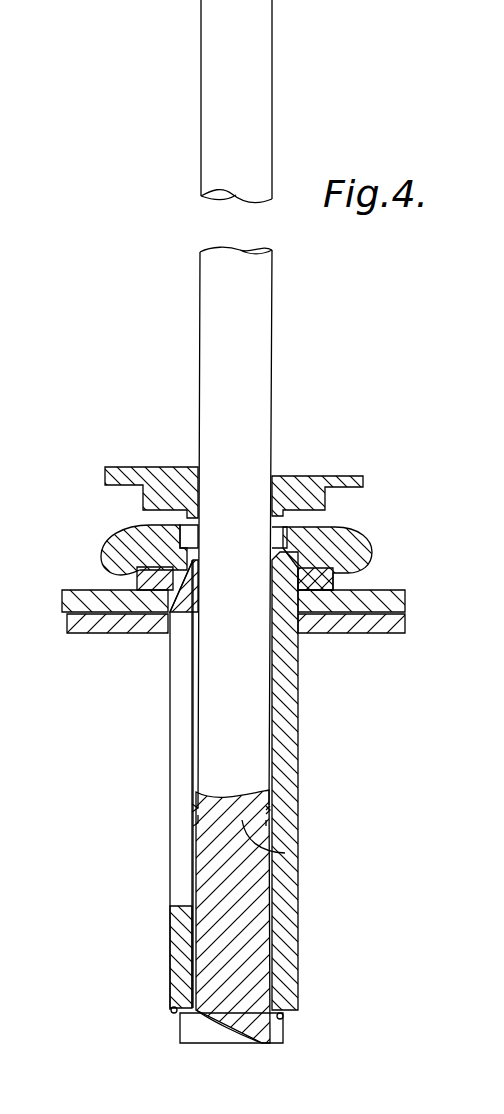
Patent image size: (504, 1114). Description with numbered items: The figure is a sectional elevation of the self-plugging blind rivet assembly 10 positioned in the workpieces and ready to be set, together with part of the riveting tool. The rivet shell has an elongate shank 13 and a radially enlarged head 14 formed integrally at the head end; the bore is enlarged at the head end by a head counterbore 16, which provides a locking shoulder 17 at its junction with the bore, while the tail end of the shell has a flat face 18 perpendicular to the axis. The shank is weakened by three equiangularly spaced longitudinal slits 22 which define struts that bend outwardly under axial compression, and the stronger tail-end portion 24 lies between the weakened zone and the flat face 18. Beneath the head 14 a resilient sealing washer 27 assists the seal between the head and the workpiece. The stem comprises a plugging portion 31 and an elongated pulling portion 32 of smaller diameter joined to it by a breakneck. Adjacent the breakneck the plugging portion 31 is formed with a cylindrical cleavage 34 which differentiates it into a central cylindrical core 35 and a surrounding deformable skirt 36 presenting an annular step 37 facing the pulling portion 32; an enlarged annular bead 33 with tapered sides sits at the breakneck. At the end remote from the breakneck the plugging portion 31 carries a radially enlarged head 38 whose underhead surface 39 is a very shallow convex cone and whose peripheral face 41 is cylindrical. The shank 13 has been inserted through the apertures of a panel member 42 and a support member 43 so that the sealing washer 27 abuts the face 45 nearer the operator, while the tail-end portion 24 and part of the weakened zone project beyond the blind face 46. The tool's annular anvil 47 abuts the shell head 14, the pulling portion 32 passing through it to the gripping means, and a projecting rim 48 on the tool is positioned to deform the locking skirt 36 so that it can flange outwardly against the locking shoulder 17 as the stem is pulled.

The self-plugging blind rivet assembly 10 is at (165, 697).
The elongate shank 13 is at (287, 730).
The radially enlarged head 14 is at (347, 548).
The head counterbore 16 is at (187, 538).
The locking shoulder 17 is at (112, 553).
The flat face 18 is at (175, 1012).
The longitudinal slits 22 is at (180, 852).
The tail-end portion 24 is at (172, 948).
The resilient sealing washer 27 is at (330, 580).
The plugging portion 31 is at (263, 928).
The pulling portion 32 is at (258, 311).
The enlarged annular bead 33 is at (270, 808).
The cylindrical cleavage 34 is at (266, 822).
The central cylindrical core 35 is at (285, 852).
The skirt 36 is at (195, 818).
The annular face or step 37 is at (192, 810).
The radially enlarged head 38 is at (283, 1035).
The underhead surface 39 is at (283, 1016).
The peripheral face 41 is at (190, 1030).
The apertured panel member 42 is at (397, 623).
The apertured member 43 is at (393, 600).
The face 45 is at (378, 588).
The back or blind face 46 is at (387, 633).
The annular anvil 47 is at (323, 515).
The projecting rim 48 is at (187, 517).